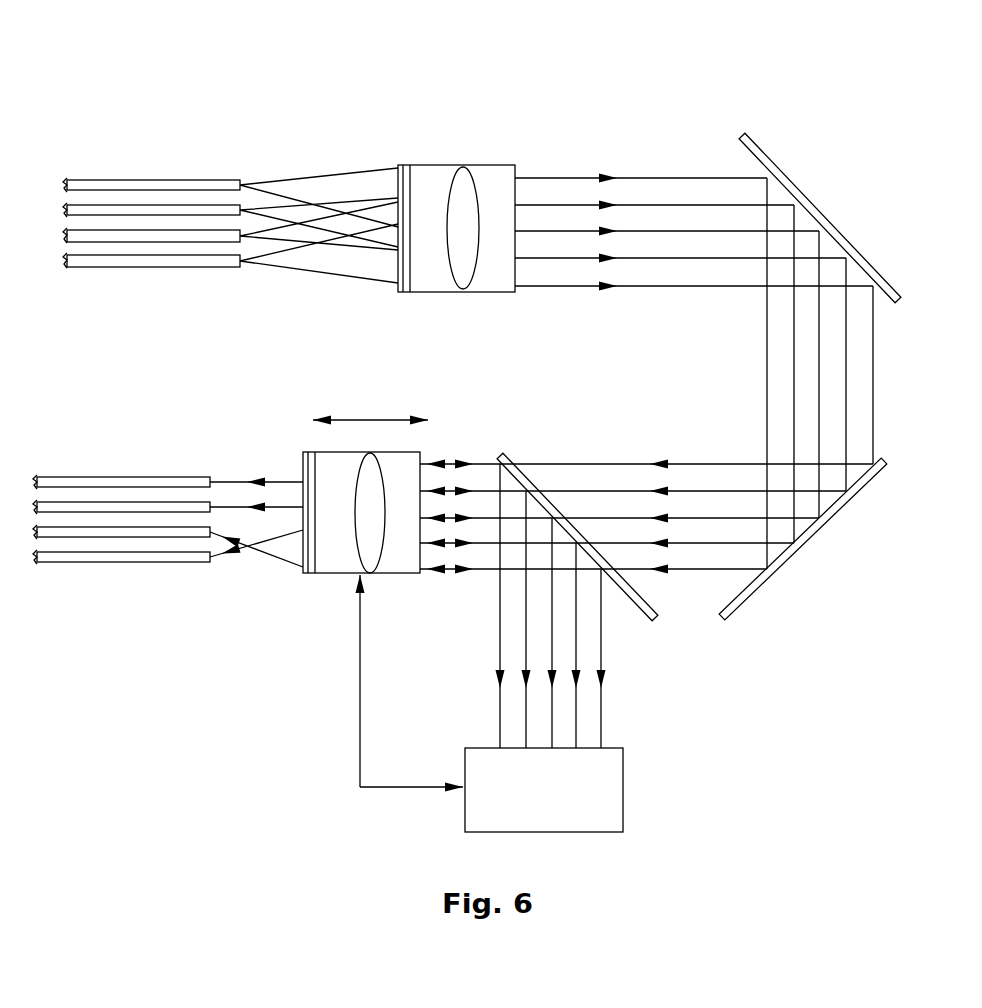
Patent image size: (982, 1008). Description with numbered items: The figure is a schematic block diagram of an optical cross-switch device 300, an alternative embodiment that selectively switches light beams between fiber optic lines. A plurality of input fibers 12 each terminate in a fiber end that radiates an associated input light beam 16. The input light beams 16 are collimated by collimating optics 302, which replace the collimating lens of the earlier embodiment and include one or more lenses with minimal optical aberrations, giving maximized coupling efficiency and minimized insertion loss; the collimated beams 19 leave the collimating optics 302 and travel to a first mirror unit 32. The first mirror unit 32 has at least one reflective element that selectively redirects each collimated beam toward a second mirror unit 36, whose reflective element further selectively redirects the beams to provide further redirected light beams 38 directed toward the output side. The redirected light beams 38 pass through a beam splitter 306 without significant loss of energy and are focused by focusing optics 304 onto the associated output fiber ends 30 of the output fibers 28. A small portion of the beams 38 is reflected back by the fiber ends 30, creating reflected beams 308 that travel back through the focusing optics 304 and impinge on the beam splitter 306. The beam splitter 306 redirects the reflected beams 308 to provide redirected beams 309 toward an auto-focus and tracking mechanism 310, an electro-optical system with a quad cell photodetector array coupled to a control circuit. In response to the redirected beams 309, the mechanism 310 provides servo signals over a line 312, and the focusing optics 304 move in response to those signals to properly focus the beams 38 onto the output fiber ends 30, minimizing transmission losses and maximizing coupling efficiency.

The optical cross-switch device 300 is at (834, 114).
The input fibers 12 is at (87, 178).
The input light beam 16 is at (318, 177).
The collimating optics 302 is at (447, 165).
The collimated light beams 19 is at (572, 177).
The first mirror unit 32 is at (832, 220).
The second mirror unit 36 is at (810, 537).
The further redirected light beams 38 is at (625, 462).
The beam splitter 306 is at (528, 477).
The reflected beams 308 is at (467, 458).
The redirected beams 309 is at (497, 643).
The auto-focus and tracking mechanism 310 is at (623, 788).
The line 312 is at (360, 752).
The focusing optics 304 is at (308, 452).
The output fiber ends 30 is at (215, 477).
The output fibers 28 is at (73, 475).